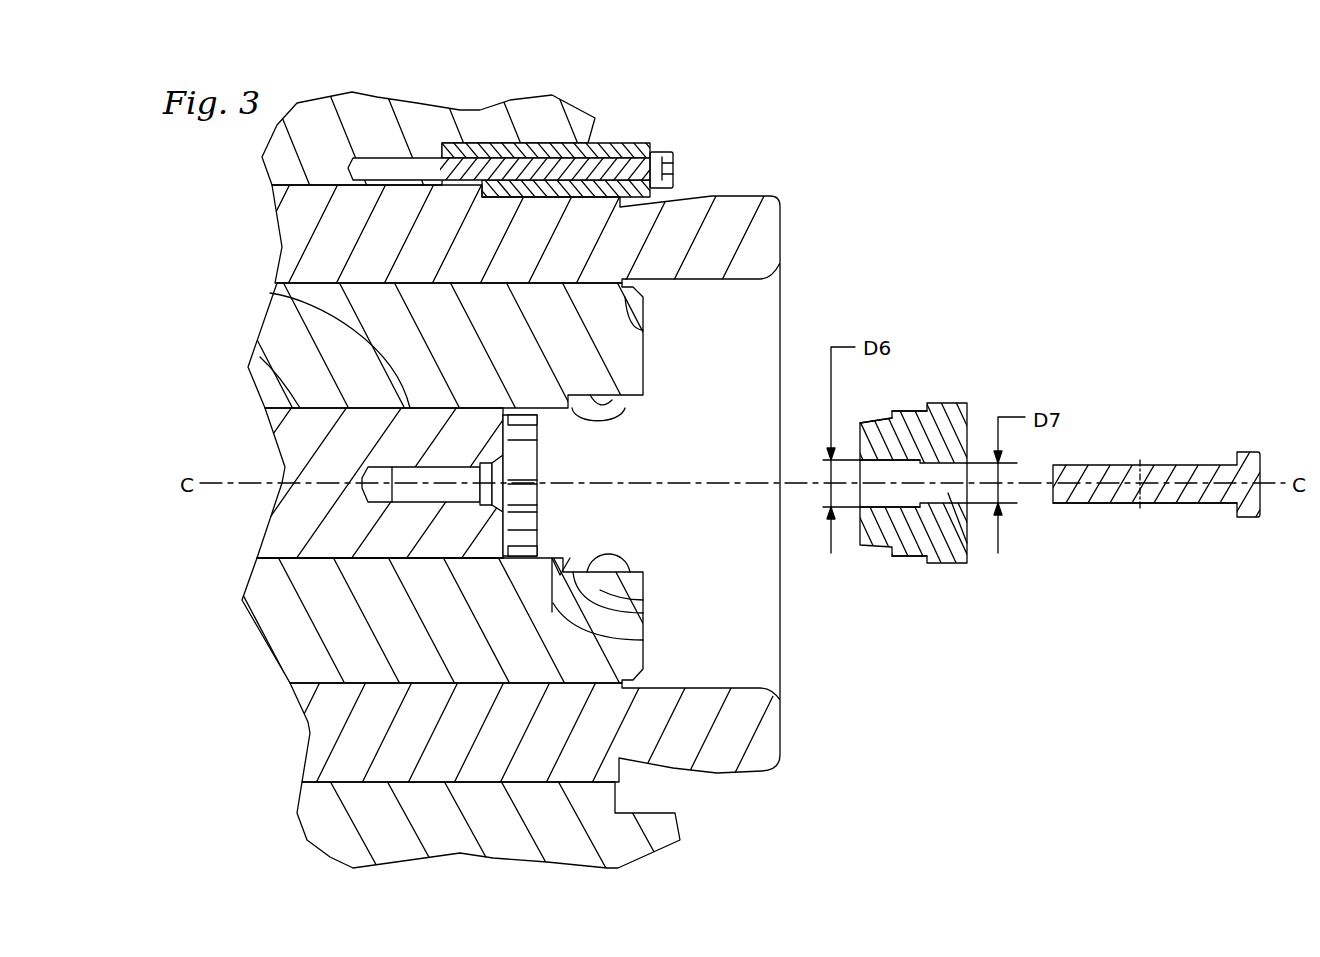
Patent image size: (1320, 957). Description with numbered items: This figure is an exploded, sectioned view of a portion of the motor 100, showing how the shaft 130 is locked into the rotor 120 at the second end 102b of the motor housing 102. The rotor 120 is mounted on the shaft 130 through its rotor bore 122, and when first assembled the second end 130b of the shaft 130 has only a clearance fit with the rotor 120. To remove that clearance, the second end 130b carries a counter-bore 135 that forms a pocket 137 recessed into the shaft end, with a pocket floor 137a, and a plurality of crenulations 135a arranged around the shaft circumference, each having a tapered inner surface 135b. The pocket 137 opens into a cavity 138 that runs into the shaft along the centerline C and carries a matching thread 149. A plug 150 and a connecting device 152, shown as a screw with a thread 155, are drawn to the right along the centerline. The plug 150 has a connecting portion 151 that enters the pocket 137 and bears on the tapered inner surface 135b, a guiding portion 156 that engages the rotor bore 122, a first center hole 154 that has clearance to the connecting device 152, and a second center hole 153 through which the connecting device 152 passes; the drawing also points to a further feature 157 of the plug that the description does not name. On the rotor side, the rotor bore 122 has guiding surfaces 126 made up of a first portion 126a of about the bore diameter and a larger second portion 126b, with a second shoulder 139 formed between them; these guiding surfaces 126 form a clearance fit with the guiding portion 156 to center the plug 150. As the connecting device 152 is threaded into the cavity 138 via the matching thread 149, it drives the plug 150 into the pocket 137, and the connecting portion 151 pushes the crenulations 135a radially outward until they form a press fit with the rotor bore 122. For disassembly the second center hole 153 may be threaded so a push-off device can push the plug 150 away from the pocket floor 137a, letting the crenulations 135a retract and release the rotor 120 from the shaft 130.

The motor 100 is at (883, 188).
The motor housing 102 is at (558, 127).
The second end of the motor housing 102b is at (578, 143).
The rotor 120 is at (647, 330).
The rotor bore 122 is at (275, 297).
The guiding surfaces 126 is at (565, 555).
The first portion of the guiding surfaces 126a is at (595, 412).
The second portion of the guiding surfaces 126b is at (645, 365).
The shaft 130 is at (258, 362).
The second end of the shaft 130b is at (480, 557).
The counter-bore 135 is at (545, 500).
The crenulations 135a is at (538, 550).
The tapered inner surface 135b is at (538, 418).
The pocket 137 is at (540, 448).
The pocket floor 137a is at (530, 487).
The cavity 138 is at (378, 480).
The second shoulder 139 is at (610, 405).
The matching thread 149 is at (330, 558).
The plug 150 is at (968, 418).
The connecting portion 151 is at (880, 420).
The connecting device 152 is at (1250, 452).
The second center hole 153 is at (967, 543).
The first center hole 154 is at (893, 497).
The thread 155 is at (1100, 505).
The guiding portion 156 is at (925, 402).
The nut lower shoulder 157 is at (913, 563).